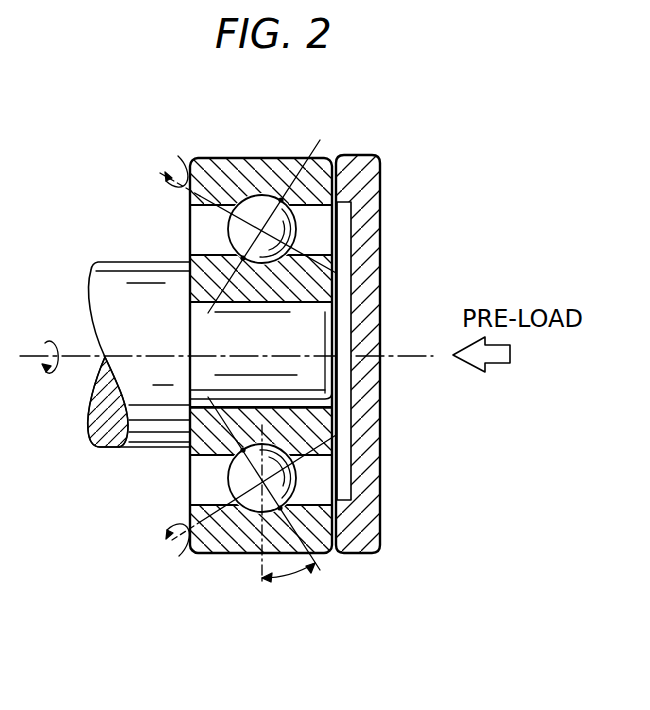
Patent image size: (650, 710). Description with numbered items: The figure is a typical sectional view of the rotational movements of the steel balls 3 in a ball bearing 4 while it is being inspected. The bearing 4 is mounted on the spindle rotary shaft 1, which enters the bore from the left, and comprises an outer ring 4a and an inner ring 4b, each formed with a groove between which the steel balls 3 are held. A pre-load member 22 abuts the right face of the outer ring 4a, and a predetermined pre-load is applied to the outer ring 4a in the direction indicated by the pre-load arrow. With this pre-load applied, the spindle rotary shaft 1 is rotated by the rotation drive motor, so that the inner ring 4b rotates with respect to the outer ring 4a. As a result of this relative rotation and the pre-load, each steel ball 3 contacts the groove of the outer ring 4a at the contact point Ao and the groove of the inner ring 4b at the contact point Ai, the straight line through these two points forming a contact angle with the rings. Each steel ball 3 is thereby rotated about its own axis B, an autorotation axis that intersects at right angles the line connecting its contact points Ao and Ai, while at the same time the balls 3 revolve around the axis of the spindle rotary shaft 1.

The spindle rotary shaft 1 is at (122, 262).
The steel ball 3 is at (291, 229).
The ball bearing 4 is at (258, 353).
The outer ring 4a is at (238, 553).
The inner ring 4b is at (192, 422).
The pre-load member 22 is at (377, 522).
The contact point Ao is at (281, 199).
The contact point Ai is at (243, 258).
The autorotation axis B is at (200, 158).